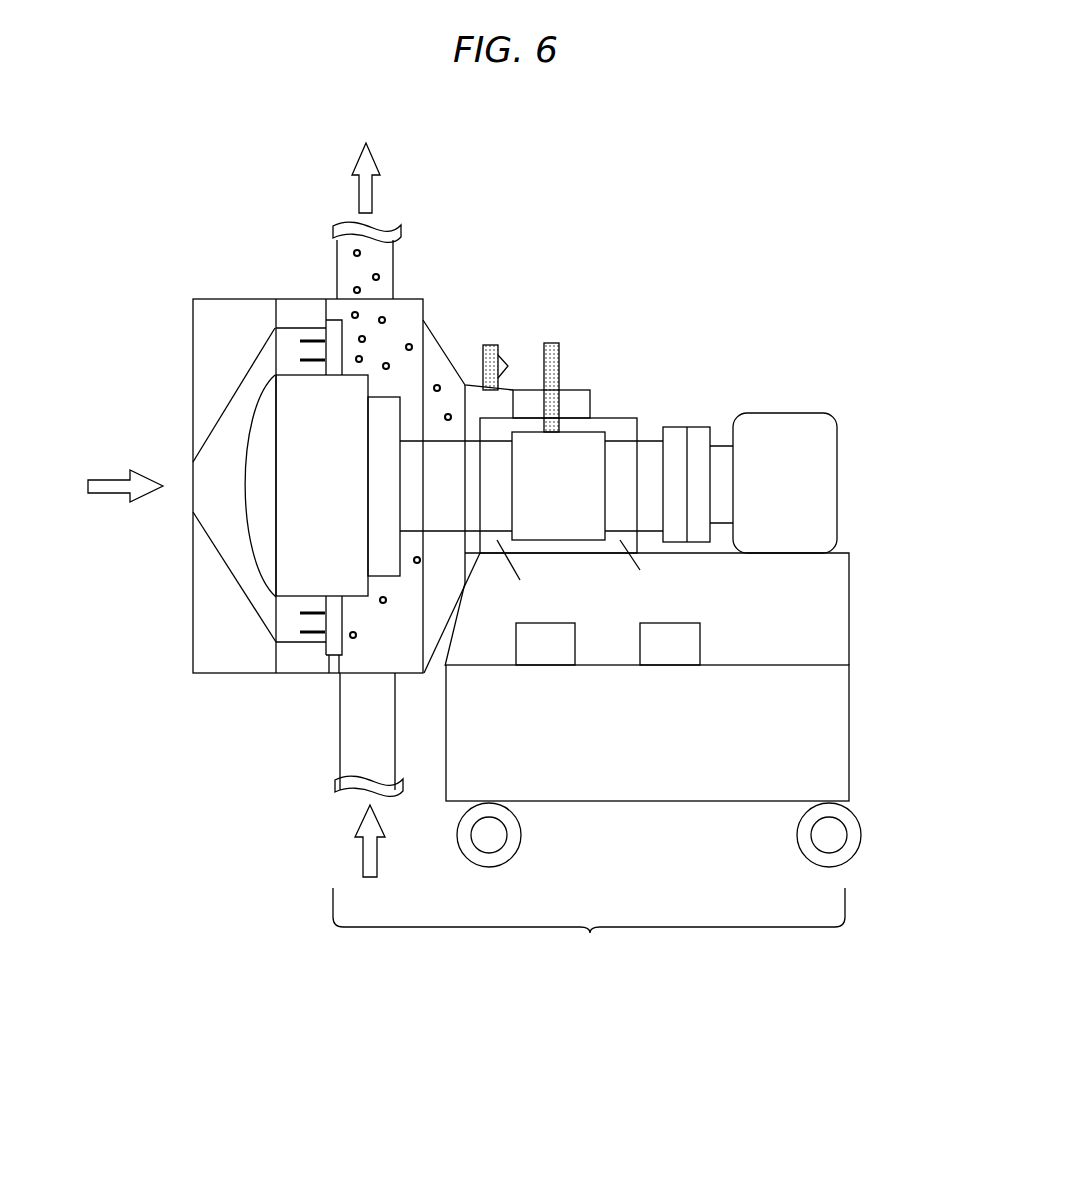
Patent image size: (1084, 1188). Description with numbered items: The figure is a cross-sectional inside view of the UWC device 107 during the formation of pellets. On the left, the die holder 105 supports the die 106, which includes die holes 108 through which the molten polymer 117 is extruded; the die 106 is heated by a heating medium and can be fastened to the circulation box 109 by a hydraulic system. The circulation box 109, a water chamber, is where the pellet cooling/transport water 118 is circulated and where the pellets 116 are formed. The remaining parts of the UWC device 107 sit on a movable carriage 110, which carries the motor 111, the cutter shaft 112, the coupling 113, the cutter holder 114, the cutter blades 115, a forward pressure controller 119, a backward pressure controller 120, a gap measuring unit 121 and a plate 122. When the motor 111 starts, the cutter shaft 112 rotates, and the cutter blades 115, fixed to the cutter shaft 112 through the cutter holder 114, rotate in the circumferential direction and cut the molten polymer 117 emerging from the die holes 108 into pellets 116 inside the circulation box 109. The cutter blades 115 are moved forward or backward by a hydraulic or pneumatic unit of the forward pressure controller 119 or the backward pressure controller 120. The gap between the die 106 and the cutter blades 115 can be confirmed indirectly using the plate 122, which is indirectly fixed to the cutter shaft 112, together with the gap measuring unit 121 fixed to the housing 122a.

The die holder 105 is at (230, 298).
The die 106 is at (318, 298).
The UWC device 107 is at (590, 930).
The die holes 108 is at (307, 340).
The circulation box 109 is at (417, 297).
The movable carriage 110 is at (849, 745).
The motor 111 is at (793, 413).
The cutter shaft 112 is at (653, 440).
The coupling 113 is at (700, 427).
The cutter holder 114 is at (368, 387).
The cutter blades 115 is at (335, 677).
The pellets 116 is at (357, 250).
The molten polymer 117 is at (196, 482).
The pellet cooling/transport water 118 is at (350, 752).
The forward pressure controller 119 is at (680, 665).
The backward pressure controller 120 is at (563, 665).
The gap measuring unit 121 is at (494, 345).
The plate 122 is at (552, 343).
The housing 122a is at (515, 390).